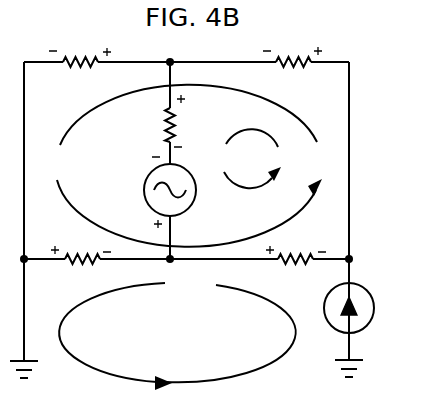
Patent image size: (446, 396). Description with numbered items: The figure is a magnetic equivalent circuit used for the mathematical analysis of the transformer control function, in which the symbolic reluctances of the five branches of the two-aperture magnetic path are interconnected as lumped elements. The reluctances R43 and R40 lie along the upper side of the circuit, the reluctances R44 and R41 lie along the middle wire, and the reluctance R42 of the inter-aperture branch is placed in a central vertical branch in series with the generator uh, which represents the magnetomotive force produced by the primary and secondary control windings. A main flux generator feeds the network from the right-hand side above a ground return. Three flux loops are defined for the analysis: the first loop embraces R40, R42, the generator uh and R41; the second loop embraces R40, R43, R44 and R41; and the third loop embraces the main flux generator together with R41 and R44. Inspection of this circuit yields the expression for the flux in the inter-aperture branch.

The reluctance of branch 43 R43 is at (80, 45).
The reluctance of branch 40 R40 is at (292, 44).
The reluctance of inter-aperture branch 42 R42 is at (152, 121).
The reluctance of branch 44 R44 is at (81, 247).
The reluctance of branch 41 R41 is at (296, 247).
The generator U_h uh is at (167, 192).